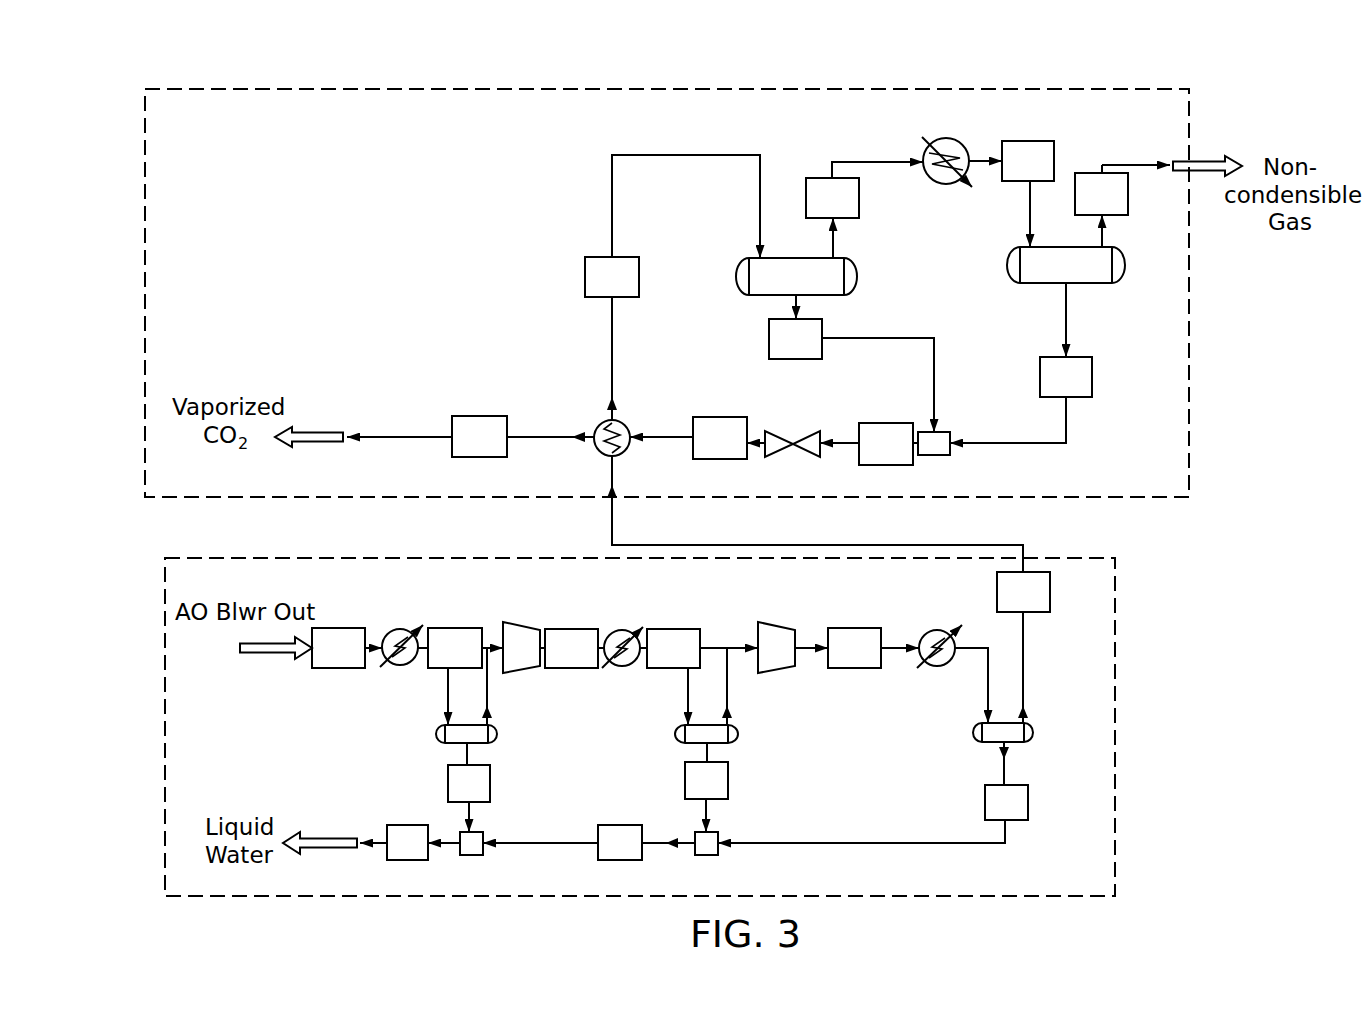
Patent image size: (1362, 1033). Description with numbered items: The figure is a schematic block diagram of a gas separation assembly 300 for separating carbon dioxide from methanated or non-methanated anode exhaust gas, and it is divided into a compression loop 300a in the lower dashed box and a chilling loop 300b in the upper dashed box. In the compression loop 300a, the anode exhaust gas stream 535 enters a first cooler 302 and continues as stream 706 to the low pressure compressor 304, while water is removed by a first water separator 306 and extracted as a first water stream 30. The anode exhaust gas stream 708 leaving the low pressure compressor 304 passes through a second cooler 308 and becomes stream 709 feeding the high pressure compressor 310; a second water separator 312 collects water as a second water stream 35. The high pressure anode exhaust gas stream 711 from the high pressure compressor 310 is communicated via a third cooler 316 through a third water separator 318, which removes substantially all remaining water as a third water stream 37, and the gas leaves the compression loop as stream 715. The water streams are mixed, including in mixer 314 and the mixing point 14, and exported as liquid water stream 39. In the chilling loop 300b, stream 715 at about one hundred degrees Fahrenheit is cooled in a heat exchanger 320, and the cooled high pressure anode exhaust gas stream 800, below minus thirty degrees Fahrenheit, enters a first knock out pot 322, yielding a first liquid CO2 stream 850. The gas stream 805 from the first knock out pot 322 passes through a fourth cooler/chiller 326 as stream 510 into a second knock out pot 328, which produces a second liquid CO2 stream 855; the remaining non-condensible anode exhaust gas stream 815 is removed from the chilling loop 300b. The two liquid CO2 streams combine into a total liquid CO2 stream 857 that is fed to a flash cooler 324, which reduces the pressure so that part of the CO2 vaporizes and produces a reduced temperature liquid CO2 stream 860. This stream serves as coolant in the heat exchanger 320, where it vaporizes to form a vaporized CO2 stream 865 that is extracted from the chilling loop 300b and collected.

The gas separation assembly 300 is at (1165, 62).
The compression loop 300a is at (1118, 708).
The chilling loop 300b is at (1197, 400).
The first cooler 302 is at (405, 670).
The low pressure (LP) compressor 304 is at (525, 622).
The first water separator 306 is at (497, 735).
The second cooler 308 is at (623, 627).
The high pressure (HP) compressor 310 is at (780, 622).
The second water separator 312 is at (738, 735).
The mixer 314 is at (718, 832).
The third cooler 316 is at (945, 668).
The third water separator 318 is at (1033, 733).
The heat exchanger 320 is at (623, 417).
The first separation device (knock out pot) 322 is at (858, 278).
The flash cooler 324 is at (800, 437).
The fourth cooler/chiller 326 is at (956, 138).
The second separation device (knock out pot) 328 is at (1105, 283).
The anode exhaust gas stream 535 is at (338, 648).
The stream 706 is at (455, 648).
The anode exhaust gas stream 708 is at (571, 648).
The stream 709 is at (673, 648).
The high pressure anode exhaust gas stream 711 is at (854, 648).
The stream 715 is at (1023, 592).
The cooled high pressure anode exhaust gas stream 800 is at (612, 277).
The anode exhaust gas stream 805 is at (832, 198).
The stream 510 is at (1028, 161).
The remaining anode exhaust gas stream 815 is at (1101, 194).
The first liquid CO2 stream 850 is at (795, 339).
The second liquid CO2 stream 855 is at (1066, 377).
The total liquid CO2 stream 857 is at (886, 444).
The reduced temperature liquid CO2 stream 860 is at (720, 438).
The vaporized CO2 stream 865 is at (479, 436).
The first water stream 30 is at (469, 783).
The second water stream 35 is at (706, 780).
The third water stream 37 is at (1006, 802).
The liquid water stream 39 is at (407, 842).
The liquid water stream 14 is at (620, 842).